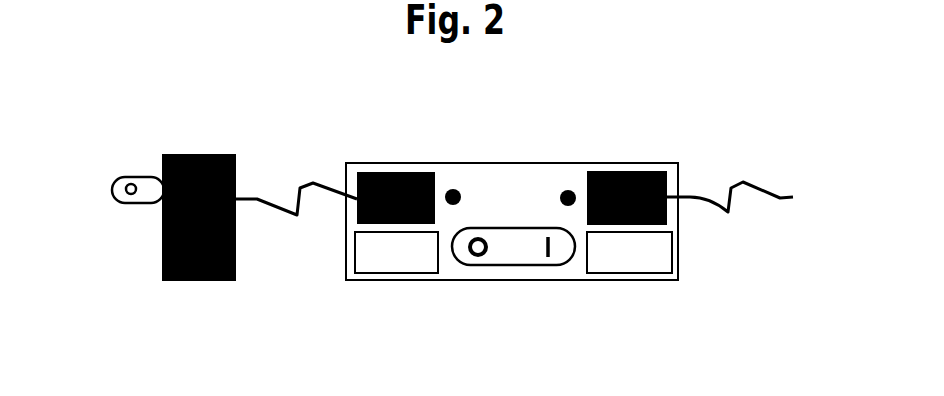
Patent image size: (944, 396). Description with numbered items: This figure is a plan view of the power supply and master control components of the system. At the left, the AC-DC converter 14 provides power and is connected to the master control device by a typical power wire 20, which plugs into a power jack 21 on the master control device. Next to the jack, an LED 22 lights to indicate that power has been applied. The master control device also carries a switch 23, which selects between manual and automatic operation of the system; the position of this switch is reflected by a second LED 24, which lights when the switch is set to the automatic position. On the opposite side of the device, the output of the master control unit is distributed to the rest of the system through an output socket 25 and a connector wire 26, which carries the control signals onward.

The AC-DC converter 14 is at (200, 143).
The power wire 20 is at (299, 222).
The power jack 21 is at (388, 168).
The LED 22 is at (452, 182).
The switch 23 is at (515, 273).
The LED 24 is at (568, 182).
The output socket 25 is at (628, 168).
The connector wire 26 is at (785, 190).